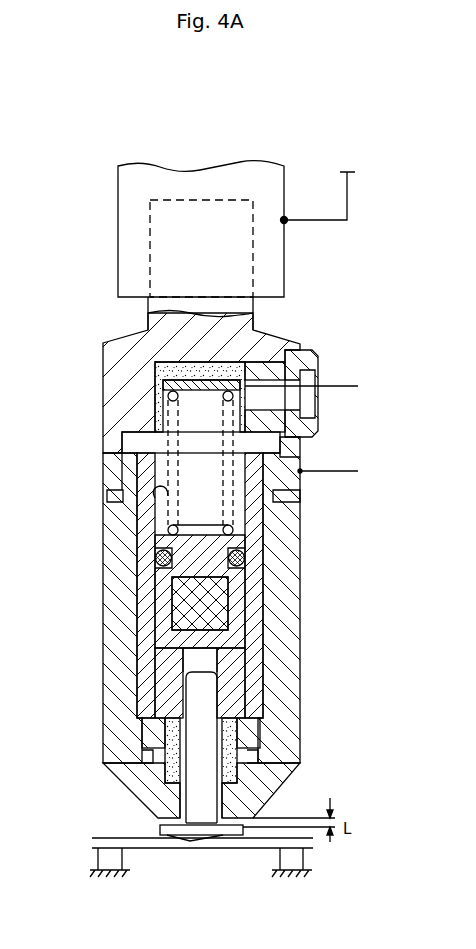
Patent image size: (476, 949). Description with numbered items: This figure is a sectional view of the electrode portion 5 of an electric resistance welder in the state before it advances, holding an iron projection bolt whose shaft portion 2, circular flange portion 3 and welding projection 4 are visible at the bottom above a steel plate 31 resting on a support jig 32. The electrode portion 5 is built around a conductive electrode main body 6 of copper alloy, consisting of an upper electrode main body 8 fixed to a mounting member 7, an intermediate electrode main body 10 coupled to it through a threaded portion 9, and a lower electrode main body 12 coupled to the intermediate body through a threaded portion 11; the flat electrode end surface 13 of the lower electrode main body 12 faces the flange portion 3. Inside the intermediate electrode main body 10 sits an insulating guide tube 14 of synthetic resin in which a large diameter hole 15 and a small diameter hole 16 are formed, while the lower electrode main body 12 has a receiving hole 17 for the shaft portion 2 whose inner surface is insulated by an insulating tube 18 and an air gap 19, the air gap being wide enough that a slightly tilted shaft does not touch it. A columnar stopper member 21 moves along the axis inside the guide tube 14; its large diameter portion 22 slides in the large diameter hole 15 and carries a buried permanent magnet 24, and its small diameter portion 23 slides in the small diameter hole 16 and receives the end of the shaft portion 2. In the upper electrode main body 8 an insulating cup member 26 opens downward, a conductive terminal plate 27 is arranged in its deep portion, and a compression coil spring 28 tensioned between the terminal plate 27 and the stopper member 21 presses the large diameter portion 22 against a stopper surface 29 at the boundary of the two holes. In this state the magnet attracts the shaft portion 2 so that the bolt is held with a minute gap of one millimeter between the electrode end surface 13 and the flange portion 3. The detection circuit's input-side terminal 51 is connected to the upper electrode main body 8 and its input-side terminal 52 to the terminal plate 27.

The shaft portion 2 is at (205, 720).
The flange portion 3 is at (167, 838).
The welding projection 4 is at (190, 842).
The electrode portion 5 is at (98, 330).
The electrode main body 6 is at (103, 583).
The mounting member 7 is at (118, 232).
The upper electrode main body 8 is at (120, 408).
The threaded portion 9 is at (122, 478).
The intermediate electrode main body 10 is at (120, 540).
The threaded portion 11 is at (145, 728).
The lower electrode main body 12 is at (118, 775).
The electrode end surface 13 is at (160, 820).
The insulating guide tube 14 is at (155, 625).
The large diameter hole 15 is at (152, 494).
The small diameter hole 16 is at (183, 668).
The receiving hole 17 is at (268, 790).
The insulating tube 18 is at (240, 748).
The air gap 19 is at (224, 836).
The stopper member 21 is at (248, 572).
The large diameter portion 22 is at (204, 535).
The small diameter portion 23 is at (212, 682).
The permanent magnet 24 is at (228, 612).
The insulating cup member 26 is at (155, 392).
The terminal plate 27 is at (243, 360).
The compression coil spring 28 is at (250, 522).
The stopper surface 29 is at (225, 650).
The steel plate 31 is at (115, 838).
The support jig 32 is at (98, 860).
The input-side terminal 51 is at (376, 471).
The input-side terminal 52 is at (378, 386).